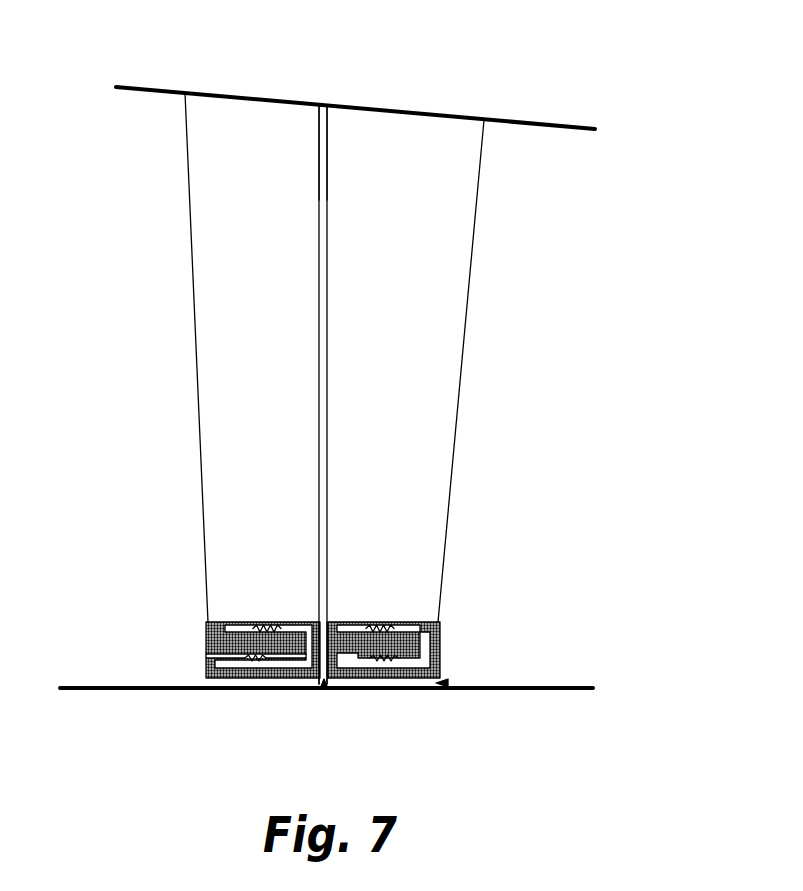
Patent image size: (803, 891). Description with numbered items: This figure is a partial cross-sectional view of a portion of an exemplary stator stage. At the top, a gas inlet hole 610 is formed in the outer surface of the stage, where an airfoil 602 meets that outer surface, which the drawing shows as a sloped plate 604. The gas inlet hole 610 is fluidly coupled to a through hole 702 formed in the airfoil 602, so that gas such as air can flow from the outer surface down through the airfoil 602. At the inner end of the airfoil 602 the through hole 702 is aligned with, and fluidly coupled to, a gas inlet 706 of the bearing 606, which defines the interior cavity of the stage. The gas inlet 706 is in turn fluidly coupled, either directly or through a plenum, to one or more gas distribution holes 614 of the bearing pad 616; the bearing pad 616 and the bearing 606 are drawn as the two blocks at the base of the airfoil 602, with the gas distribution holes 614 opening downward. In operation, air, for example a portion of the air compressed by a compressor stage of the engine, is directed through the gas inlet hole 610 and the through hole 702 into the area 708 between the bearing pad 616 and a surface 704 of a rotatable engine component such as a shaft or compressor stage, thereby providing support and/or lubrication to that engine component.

The airfoil 602 is at (472, 255).
The top plate 604 is at (548, 128).
The bearing 606 is at (440, 629).
The gas inlet hole 610 is at (323, 103).
The gas distribution hole 614 is at (324, 689).
The bearing pad 616 is at (238, 678).
The through hole 702 is at (328, 239).
The surface of a rotatable engine component 704 is at (570, 687).
The gas inlet 706 is at (319, 665).
The area 708 is at (447, 683).